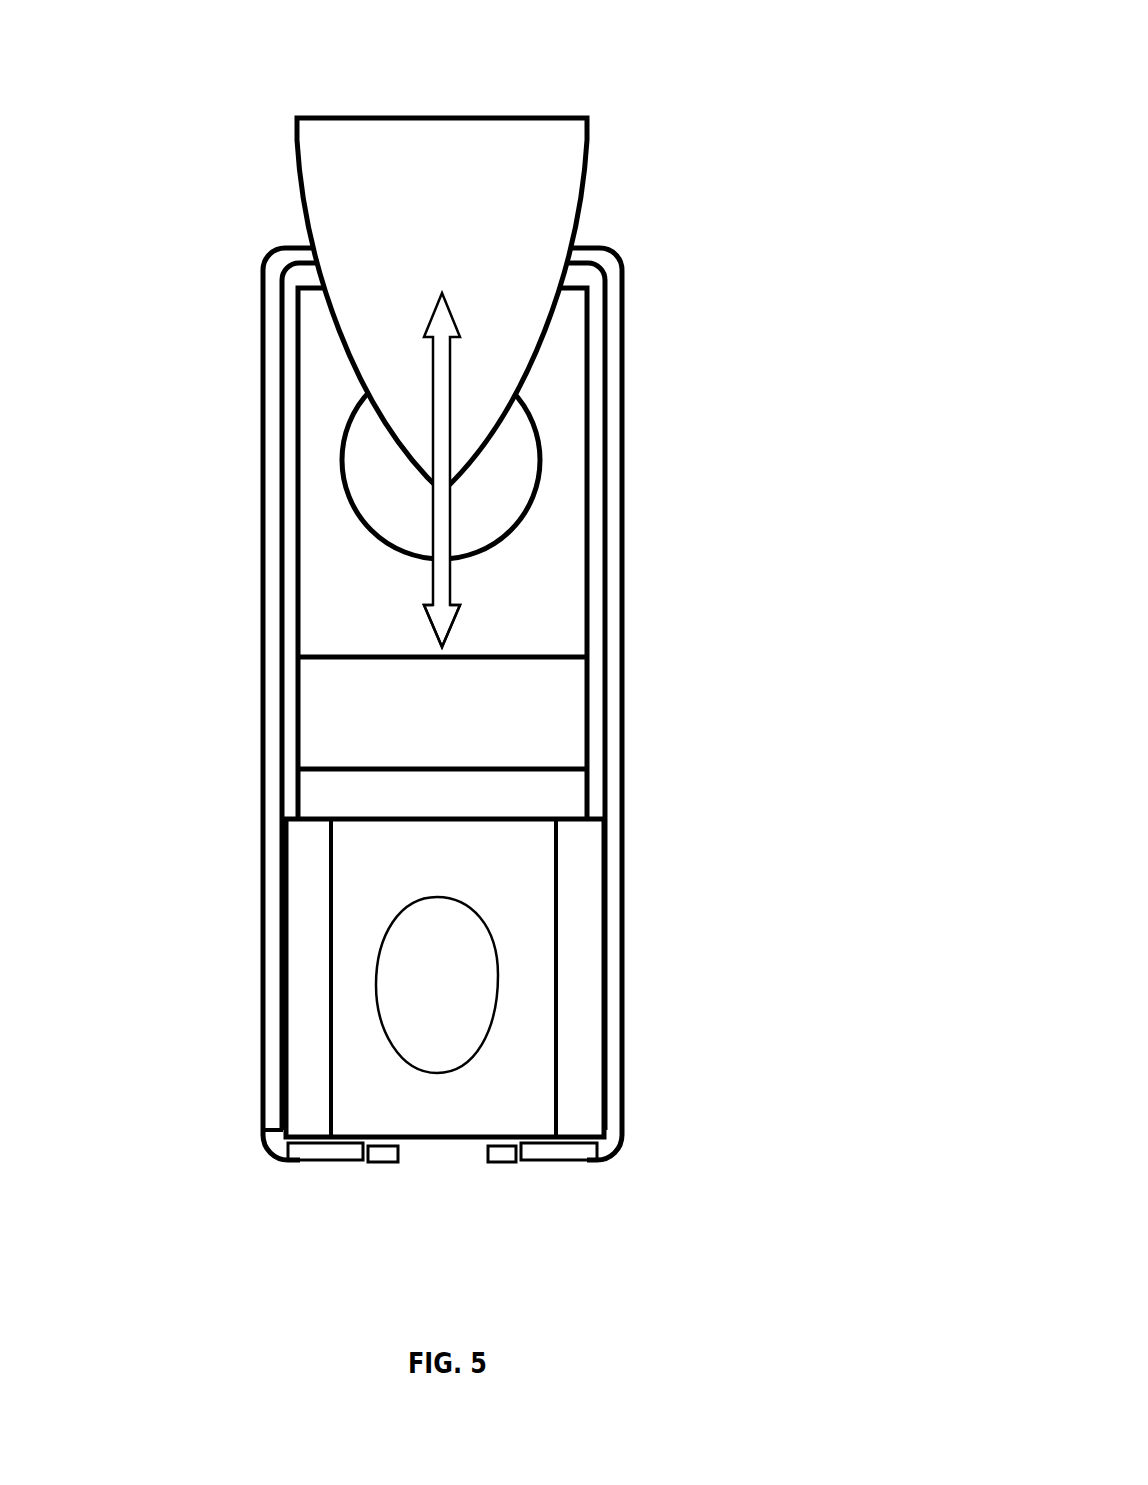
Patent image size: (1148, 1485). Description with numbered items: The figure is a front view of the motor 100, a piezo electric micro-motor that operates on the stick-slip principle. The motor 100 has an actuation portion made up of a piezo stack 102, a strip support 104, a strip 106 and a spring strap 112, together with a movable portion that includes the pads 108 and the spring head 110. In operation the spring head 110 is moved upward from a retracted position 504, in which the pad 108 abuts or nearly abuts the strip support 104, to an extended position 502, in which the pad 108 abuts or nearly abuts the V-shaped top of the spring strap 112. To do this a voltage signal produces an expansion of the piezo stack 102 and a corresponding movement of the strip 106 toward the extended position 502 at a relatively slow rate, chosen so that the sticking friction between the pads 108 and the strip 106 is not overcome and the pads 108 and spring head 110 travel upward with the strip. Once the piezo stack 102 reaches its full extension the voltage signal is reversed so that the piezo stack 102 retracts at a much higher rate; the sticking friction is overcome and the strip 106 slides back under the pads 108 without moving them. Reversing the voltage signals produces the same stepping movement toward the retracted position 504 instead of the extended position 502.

The motor 100 is at (785, 100).
The piezo stack 102 is at (472, 1110).
The strip support 104 is at (527, 728).
The strip 106 is at (343, 598).
The pad 108 is at (497, 498).
The spring head 110 is at (418, 160).
The spring strap 112 is at (268, 1032).
The extended position 502 is at (443, 293).
The retracted position 504 is at (443, 648).